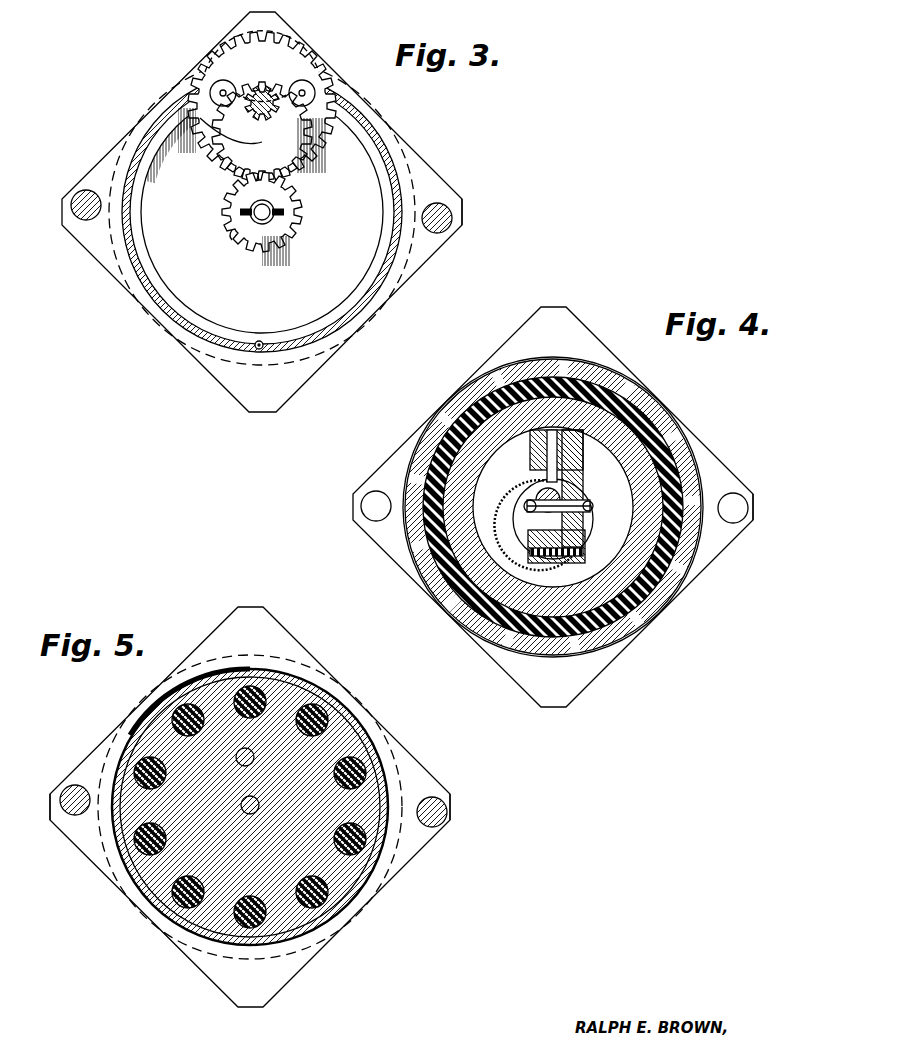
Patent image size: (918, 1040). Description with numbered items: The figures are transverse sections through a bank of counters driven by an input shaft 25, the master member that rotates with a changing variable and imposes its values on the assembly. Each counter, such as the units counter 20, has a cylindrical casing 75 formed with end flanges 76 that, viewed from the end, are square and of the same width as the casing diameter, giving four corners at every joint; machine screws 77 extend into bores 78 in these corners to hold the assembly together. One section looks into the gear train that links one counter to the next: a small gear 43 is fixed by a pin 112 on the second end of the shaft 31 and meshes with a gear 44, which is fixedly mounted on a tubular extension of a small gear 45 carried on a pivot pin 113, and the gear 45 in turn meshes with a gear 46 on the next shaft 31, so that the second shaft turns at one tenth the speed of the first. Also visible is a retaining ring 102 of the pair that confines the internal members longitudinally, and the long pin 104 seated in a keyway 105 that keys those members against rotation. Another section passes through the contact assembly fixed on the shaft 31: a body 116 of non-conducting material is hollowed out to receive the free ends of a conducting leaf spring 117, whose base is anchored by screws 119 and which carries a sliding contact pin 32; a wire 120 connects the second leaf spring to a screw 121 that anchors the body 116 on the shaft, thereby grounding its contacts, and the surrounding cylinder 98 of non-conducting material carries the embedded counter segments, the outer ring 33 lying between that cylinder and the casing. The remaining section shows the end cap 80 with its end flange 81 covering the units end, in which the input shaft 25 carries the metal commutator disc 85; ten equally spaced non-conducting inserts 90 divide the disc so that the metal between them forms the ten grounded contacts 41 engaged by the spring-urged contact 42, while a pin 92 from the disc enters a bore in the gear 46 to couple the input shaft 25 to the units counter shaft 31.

In FIG. 4, the units counter 20 is at (705, 464).
In FIG. 5, the input shaft 25 is at (250, 814).
In FIG. 3, the shaft 31 is at (250, 250).
In FIG. 4, the shaft 31 is at (512, 522).
In FIG. 4, the contact 32 is at (537, 452).
In FIG. 4, the insulating ring 33 is at (672, 422).
In FIG. 5, the grounded contacts 41 is at (303, 688).
In FIG. 5, the contact 42 is at (305, 736).
In FIG. 3, the small gear 43 is at (232, 230).
In FIG. 3, the gear 44 is at (302, 68).
In FIG. 3, the small gear 45 is at (203, 132).
In FIG. 3, the gear 46 is at (214, 162).
In FIG. 3, the cylindrical casing 75 is at (405, 168).
In FIG. 4, the cylindrical casing 75 is at (622, 372).
In FIG. 3, the end flange 76 is at (430, 182).
In FIG. 4, the end flange 76 is at (585, 360).
In FIG. 3, the machine screws 77 is at (80, 220).
In FIG. 4, the machine screws 77 is at (360, 503).
In FIG. 5, the machine screws 77 is at (60, 797).
In FIG. 3, the bores 78 is at (462, 207).
In FIG. 4, the bores 78 is at (735, 500).
In FIG. 5, the bores 78 is at (63, 823).
In FIG. 5, the end cap 80 is at (163, 932).
In FIG. 5, the end flange 81 is at (88, 850).
In FIG. 5, the commutator disc 85 is at (147, 880).
In FIG. 5, the inserts 90 is at (325, 705).
In FIG. 5, the pin 92 is at (238, 760).
In FIG. 4, the cylinder 98 is at (655, 400).
In FIG. 3, the retaining rings 102 is at (360, 272).
In FIG. 3, the pin 104 is at (261, 341).
In FIG. 3, the keyway 105 is at (260, 352).
In FIG. 5, the keyway 105 is at (247, 943).
In FIG. 3, the pin 112 is at (290, 212).
In FIG. 3, the pivot pin 113 is at (262, 121).
In FIG. 4, the body 116 is at (584, 465).
In FIG. 4, the leaf spring 117 is at (500, 506).
In FIG. 4, the screws 119 is at (590, 546).
In FIG. 4, the wire 120 is at (590, 512).
In FIG. 4, the screw 121 is at (592, 500).